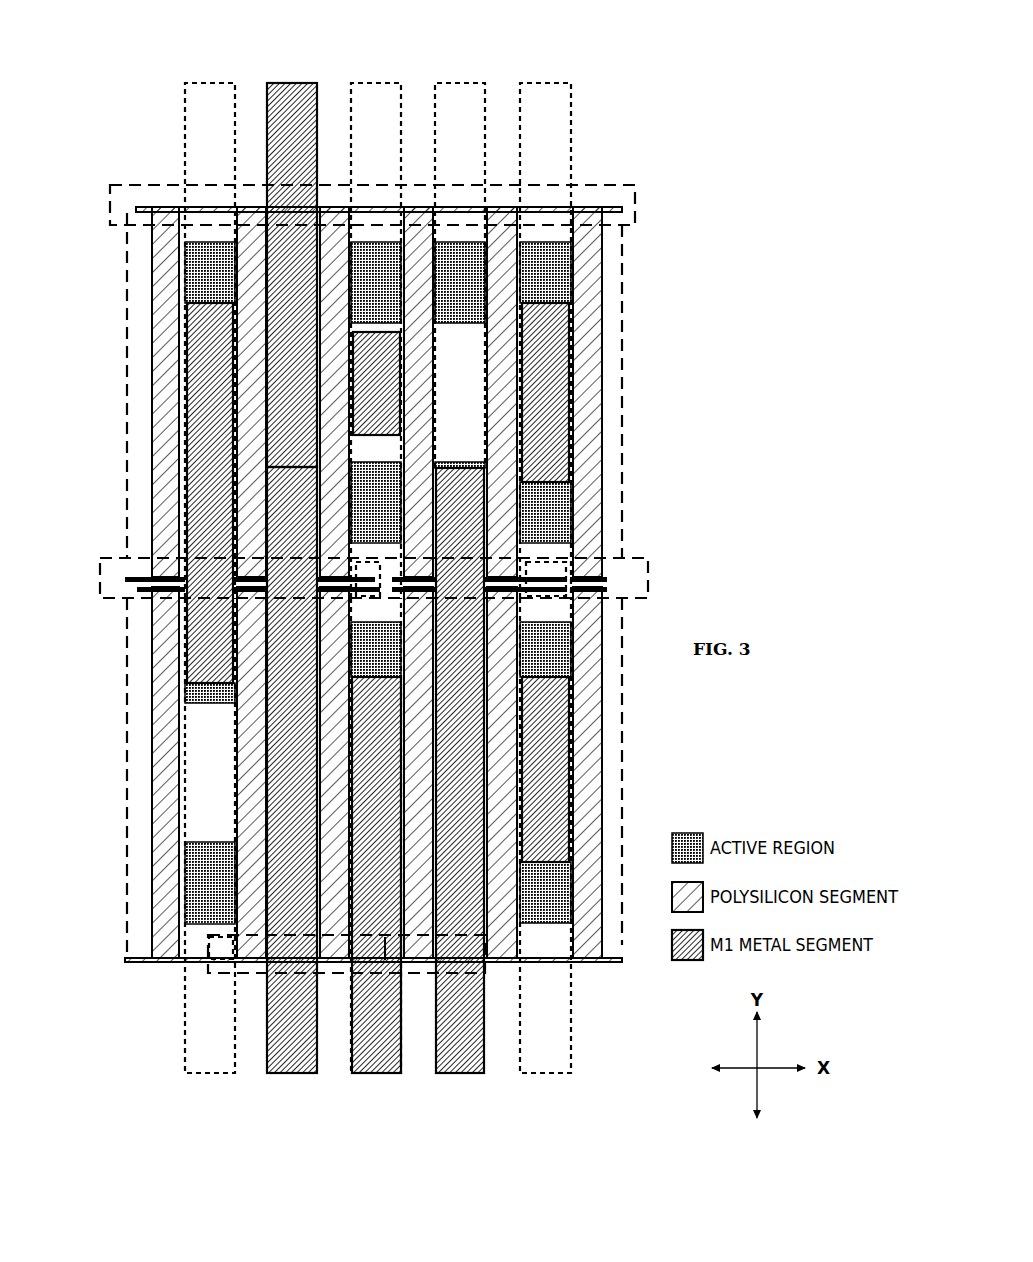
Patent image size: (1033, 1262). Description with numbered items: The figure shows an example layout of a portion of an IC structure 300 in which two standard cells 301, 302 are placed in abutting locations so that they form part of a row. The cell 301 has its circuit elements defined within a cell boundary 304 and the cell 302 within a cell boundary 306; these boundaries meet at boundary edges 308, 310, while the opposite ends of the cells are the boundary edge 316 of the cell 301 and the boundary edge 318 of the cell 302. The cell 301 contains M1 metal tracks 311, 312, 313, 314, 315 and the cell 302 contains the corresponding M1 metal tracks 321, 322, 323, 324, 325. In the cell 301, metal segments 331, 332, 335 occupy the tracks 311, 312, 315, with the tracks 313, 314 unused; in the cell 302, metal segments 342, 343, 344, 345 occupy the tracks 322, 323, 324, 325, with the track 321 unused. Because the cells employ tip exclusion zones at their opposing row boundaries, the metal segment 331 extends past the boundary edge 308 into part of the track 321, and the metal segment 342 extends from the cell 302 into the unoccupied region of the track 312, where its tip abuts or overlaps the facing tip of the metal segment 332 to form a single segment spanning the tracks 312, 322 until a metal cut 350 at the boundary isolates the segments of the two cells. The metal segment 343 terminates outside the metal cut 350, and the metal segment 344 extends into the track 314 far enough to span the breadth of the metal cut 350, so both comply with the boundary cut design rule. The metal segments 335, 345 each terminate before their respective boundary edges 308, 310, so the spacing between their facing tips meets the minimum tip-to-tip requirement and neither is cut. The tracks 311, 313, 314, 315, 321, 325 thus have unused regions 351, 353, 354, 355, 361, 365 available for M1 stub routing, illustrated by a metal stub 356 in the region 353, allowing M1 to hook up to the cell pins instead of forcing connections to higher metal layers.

The IC structure 300 is at (667, 98).
The cell 301 is at (636, 278).
The cell 302 is at (636, 742).
The cell boundary 304 is at (625, 425).
The cell boundary 306 is at (625, 680).
The boundary edge 308 is at (140, 577).
The boundary edge 310 is at (141, 592).
The metal track 311 is at (208, 80).
The metal track 312 is at (293, 80).
The metal track 313 is at (377, 80).
The metal track 314 is at (458, 78).
The metal track 315 is at (543, 78).
The boundary edge 316 is at (137, 206).
The boundary edge 318 is at (150, 961).
The metal track 321 is at (217, 1077).
The metal track 322 is at (300, 1077).
The metal track 323 is at (385, 1077).
The metal track 324 is at (468, 1077).
The metal track 325 is at (552, 1077).
The metal segment 331 is at (216, 672).
The metal segment 332 is at (287, 90).
The metal segment 335 is at (552, 385).
The metal segment 342 is at (283, 1073).
The metal segment 343 is at (368, 1073).
The metal segment 344 is at (453, 1073).
The metal segment 345 is at (550, 808).
The metal cut 350 is at (100, 576).
The unused region 351 is at (205, 108).
The unused region 353 is at (375, 108).
The unused region 354 is at (467, 105).
The unused region 355 is at (550, 105).
The metal stub 356 is at (368, 390).
The unused region 361 is at (207, 1038).
The unused region 365 is at (543, 1033).